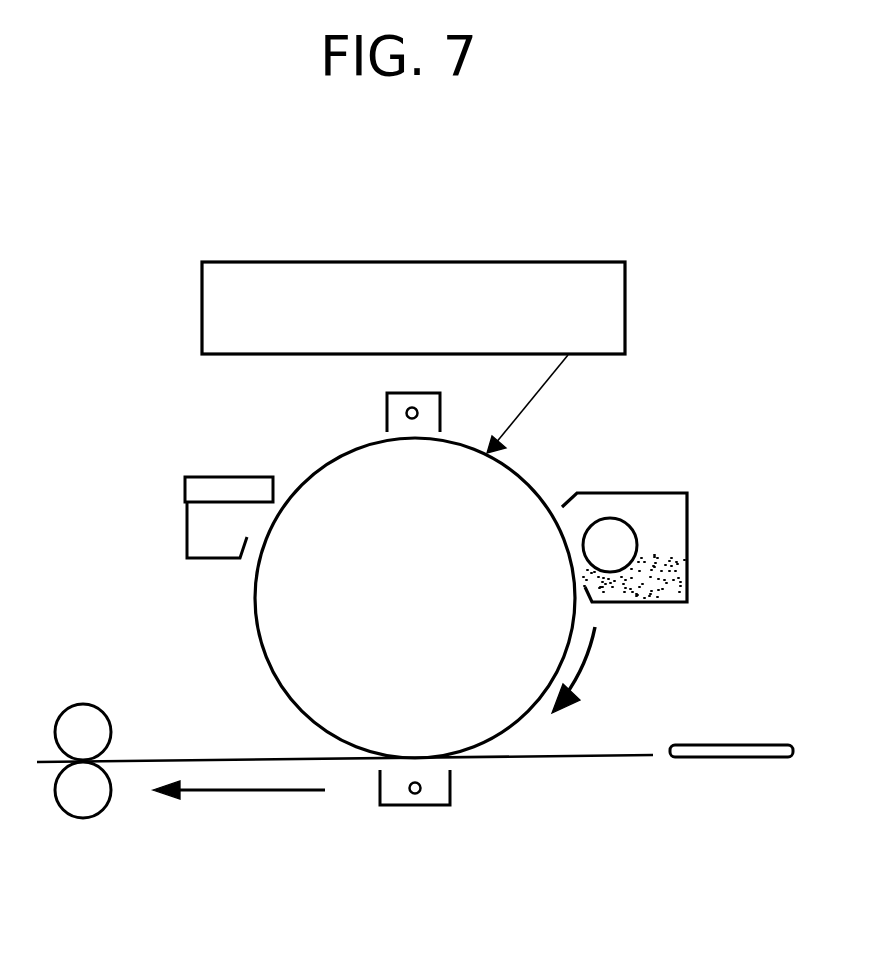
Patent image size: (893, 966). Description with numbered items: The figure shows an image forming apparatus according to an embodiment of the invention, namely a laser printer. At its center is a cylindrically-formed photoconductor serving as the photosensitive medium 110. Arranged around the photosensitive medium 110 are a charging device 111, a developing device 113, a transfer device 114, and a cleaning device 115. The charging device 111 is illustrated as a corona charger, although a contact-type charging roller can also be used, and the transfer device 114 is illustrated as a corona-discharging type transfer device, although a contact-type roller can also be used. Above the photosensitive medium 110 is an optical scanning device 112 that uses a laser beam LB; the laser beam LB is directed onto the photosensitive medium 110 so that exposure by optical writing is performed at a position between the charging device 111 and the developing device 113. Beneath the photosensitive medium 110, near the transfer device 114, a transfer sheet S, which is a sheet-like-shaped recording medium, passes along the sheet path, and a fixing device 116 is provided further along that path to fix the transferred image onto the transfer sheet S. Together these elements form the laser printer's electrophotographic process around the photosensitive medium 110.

The photosensitive medium 110 is at (255, 598).
The charging device 111 is at (387, 415).
The optical scanning device 112 is at (625, 322).
The developing device 113 is at (688, 568).
The transfer device 114 is at (408, 806).
The cleaning device 115 is at (185, 515).
The fixing device 116 is at (107, 805).
The laser beam LB is at (547, 382).
The transfer sheet S is at (705, 758).